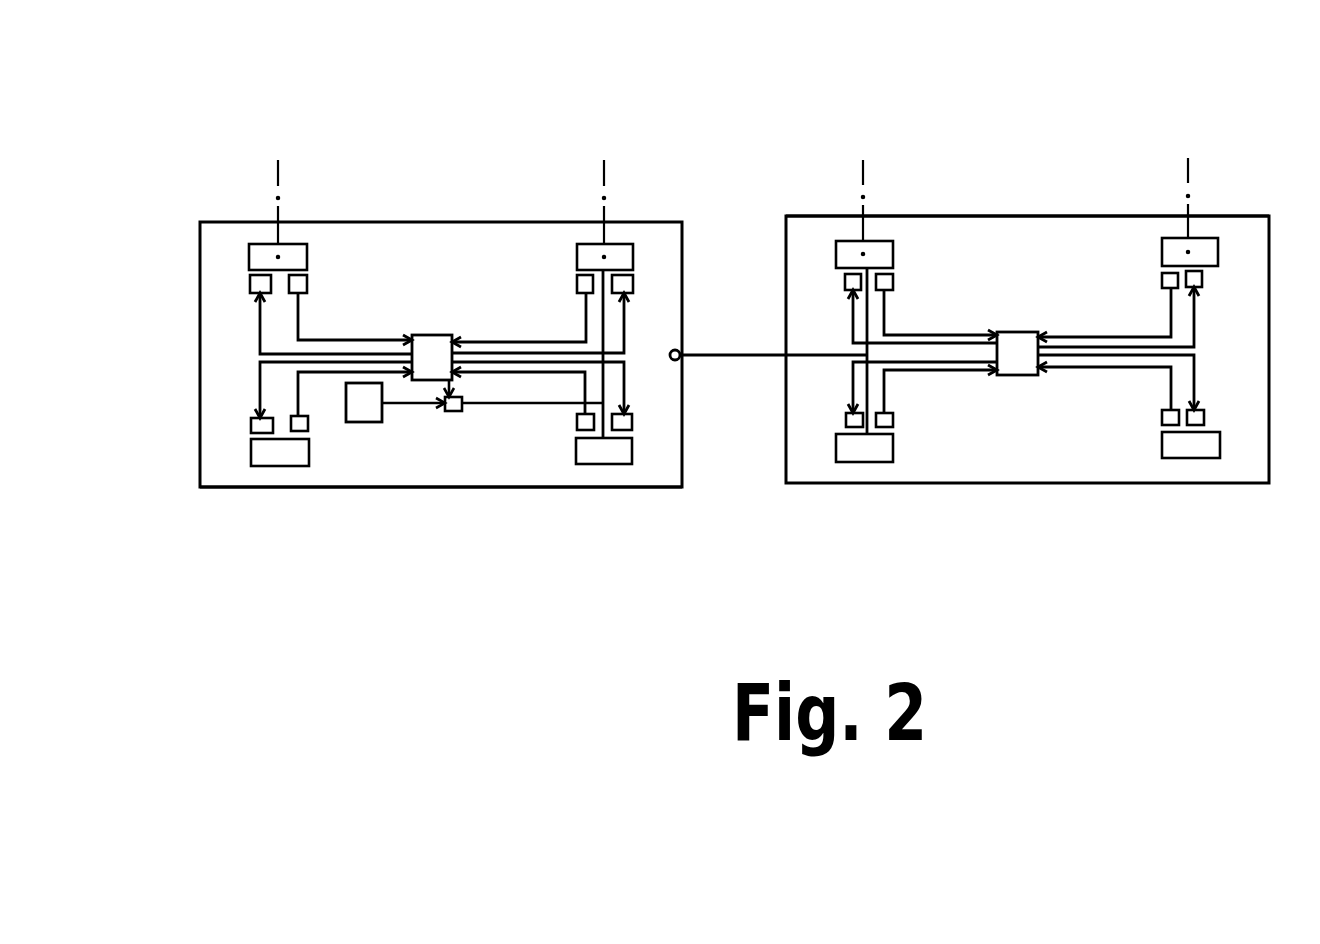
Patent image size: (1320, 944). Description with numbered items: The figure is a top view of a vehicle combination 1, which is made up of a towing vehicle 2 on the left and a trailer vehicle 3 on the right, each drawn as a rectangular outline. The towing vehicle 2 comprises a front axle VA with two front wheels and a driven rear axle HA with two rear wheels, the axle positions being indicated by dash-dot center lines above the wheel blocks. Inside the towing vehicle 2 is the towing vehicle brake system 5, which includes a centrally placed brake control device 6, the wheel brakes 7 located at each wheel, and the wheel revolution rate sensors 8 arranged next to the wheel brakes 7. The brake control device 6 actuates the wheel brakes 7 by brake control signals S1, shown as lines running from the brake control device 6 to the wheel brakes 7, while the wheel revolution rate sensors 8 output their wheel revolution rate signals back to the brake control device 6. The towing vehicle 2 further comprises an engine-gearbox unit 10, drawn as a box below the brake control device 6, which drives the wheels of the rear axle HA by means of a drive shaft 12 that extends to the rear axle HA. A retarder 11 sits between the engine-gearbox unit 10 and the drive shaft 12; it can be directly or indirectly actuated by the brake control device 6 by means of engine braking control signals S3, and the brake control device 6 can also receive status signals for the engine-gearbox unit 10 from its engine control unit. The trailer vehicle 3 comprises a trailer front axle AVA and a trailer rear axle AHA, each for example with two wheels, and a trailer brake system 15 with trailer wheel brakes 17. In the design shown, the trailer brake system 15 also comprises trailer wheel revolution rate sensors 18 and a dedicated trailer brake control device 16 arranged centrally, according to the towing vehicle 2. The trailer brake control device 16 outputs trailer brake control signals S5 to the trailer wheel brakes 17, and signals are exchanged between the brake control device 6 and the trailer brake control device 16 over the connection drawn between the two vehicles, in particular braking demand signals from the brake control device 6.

The vehicle combination 1 is at (193, 103).
The towing vehicle 2 is at (213, 488).
The trailer vehicle 3 is at (1246, 215).
The towing vehicle brake system 5 is at (489, 254).
The brake control device 6 is at (428, 357).
The wheel brakes 7 is at (250, 282).
The wheel revolution rate sensors 8 is at (307, 283).
The engine-gearbox unit 10 is at (360, 405).
The retarder 11 is at (452, 413).
The drive shaft 12 is at (542, 405).
The trailer brake system 15 is at (951, 257).
The trailer brake control device 16 is at (1015, 368).
The trailer wheel brakes 17 is at (845, 283).
The trailer wheel revolution rate sensors 18 is at (893, 420).
The brake control signals S1 is at (260, 333).
The engine braking control signals S3 is at (462, 383).
The trailer brake control signals S5 is at (852, 389).
The front axle VA is at (277, 173).
The rear axle HA is at (604, 180).
The trailer front axle AVA is at (862, 172).
The trailer rear axle AHA is at (1187, 172).